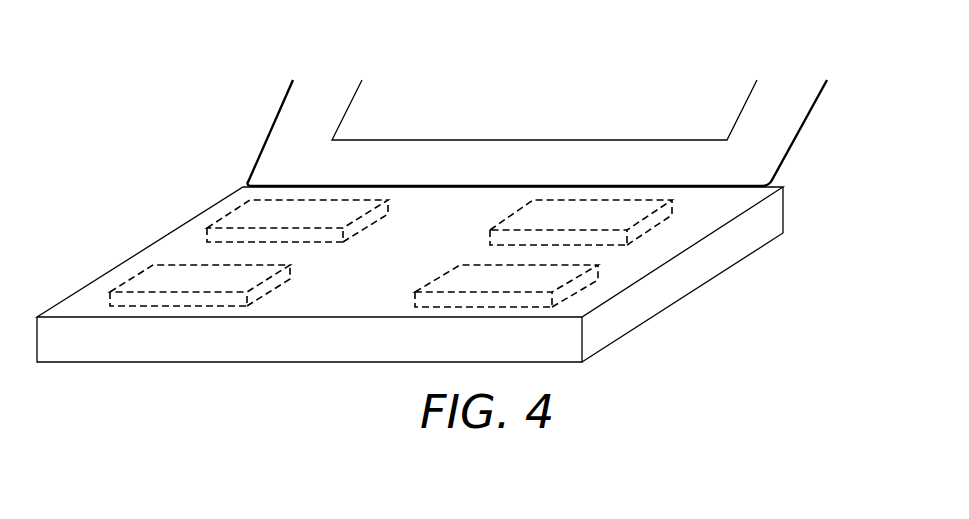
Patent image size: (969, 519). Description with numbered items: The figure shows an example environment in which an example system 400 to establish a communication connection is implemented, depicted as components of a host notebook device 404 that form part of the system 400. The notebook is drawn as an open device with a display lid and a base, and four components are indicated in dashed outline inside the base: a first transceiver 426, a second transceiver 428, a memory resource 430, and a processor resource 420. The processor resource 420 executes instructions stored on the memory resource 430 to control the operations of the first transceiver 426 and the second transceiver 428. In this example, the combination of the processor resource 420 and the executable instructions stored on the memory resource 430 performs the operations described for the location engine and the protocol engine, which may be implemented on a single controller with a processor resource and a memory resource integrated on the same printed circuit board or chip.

The system 400 is at (451, 221).
The host notebook device 404 is at (784, 221).
The processor resource 420 is at (413, 275).
The first transceiver 426 is at (398, 212).
The second transceiver 428 is at (287, 297).
The memory resource 430 is at (480, 240).